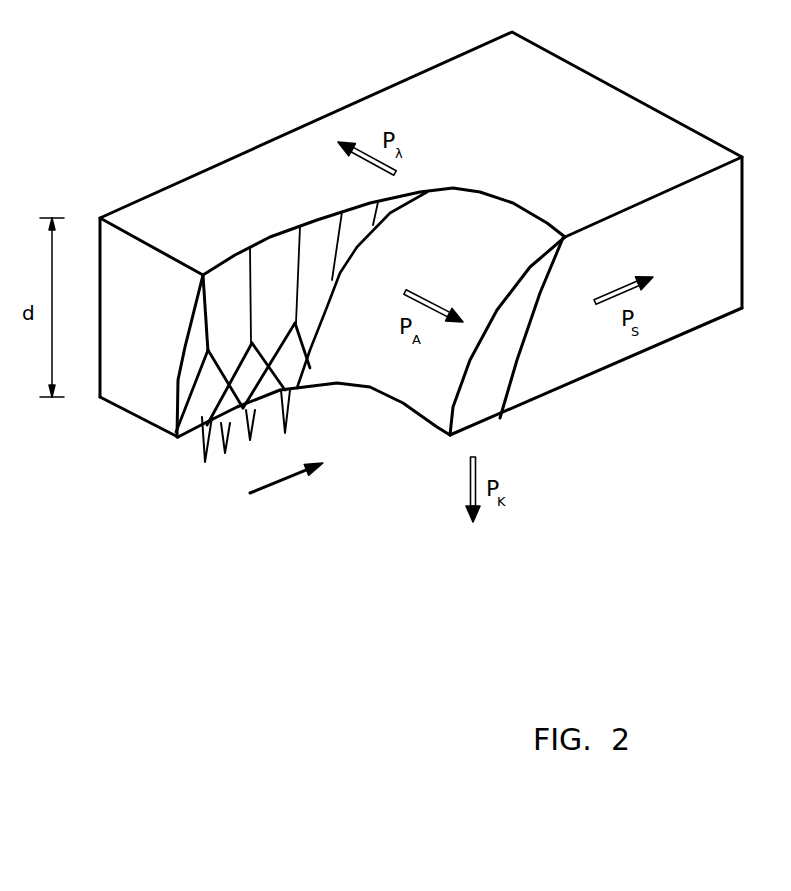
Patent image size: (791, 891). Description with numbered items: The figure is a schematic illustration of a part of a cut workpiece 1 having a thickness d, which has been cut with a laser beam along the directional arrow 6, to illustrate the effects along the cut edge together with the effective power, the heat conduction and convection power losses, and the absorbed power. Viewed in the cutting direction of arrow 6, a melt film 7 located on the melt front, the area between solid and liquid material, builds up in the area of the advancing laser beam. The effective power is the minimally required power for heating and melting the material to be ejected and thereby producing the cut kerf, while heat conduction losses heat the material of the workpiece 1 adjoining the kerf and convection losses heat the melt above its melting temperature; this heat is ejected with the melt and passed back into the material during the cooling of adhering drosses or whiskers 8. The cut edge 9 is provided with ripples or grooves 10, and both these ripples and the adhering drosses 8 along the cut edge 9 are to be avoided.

The workpiece 1 is at (571, 90).
The directional arrow 6 is at (292, 478).
The melt film 7 is at (495, 380).
The adhering drosses 8 is at (243, 443).
The cut edge 9 is at (188, 427).
The ripples or grooves 10 is at (262, 330).